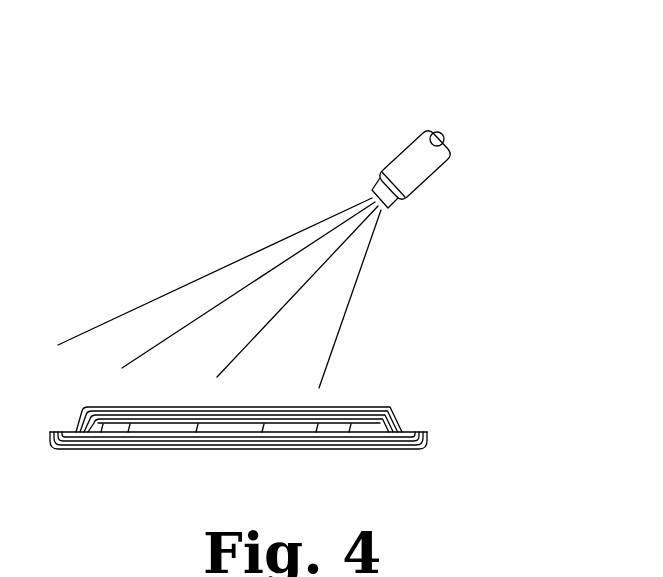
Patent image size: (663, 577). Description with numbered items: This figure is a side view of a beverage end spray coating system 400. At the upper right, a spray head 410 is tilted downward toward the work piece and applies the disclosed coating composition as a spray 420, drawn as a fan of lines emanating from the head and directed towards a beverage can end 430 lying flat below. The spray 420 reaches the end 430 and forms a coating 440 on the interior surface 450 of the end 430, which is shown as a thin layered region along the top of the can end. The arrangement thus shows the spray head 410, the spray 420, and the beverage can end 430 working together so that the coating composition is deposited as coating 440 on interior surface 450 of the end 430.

The spray coating system 400 is at (199, 188).
The spray head 410 is at (418, 183).
The spray 420 is at (345, 317).
The beverage can end 430 is at (365, 450).
The coating 440 is at (398, 417).
The interior surface 450 is at (405, 427).